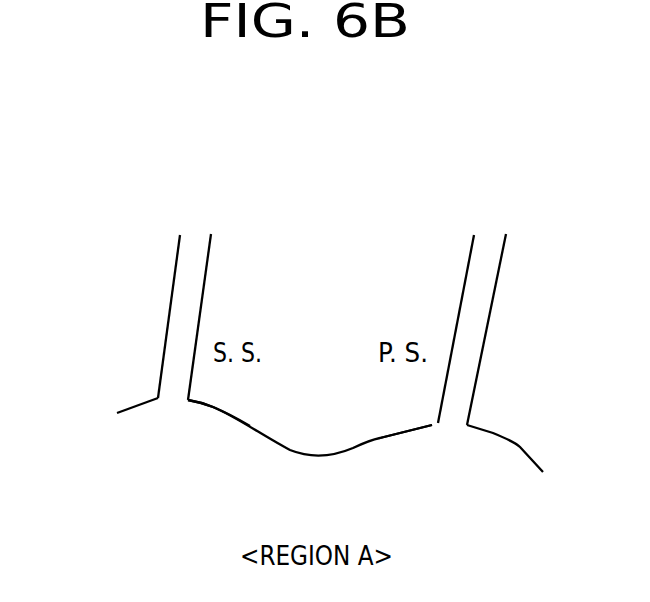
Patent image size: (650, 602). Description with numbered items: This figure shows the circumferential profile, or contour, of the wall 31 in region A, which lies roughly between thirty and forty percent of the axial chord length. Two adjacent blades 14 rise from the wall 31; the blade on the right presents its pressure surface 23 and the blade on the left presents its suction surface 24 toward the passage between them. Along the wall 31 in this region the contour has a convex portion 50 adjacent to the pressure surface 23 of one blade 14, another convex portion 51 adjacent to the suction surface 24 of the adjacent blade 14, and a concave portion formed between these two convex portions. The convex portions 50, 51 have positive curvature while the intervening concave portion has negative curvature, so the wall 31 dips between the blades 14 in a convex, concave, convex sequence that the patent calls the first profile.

The blade 14 is at (178, 248).
The suction surface 24 is at (210, 258).
The pressure surface 23 is at (467, 252).
The wall 31 is at (120, 413).
The convex portion 51 is at (213, 408).
The convex portion 50 is at (412, 430).